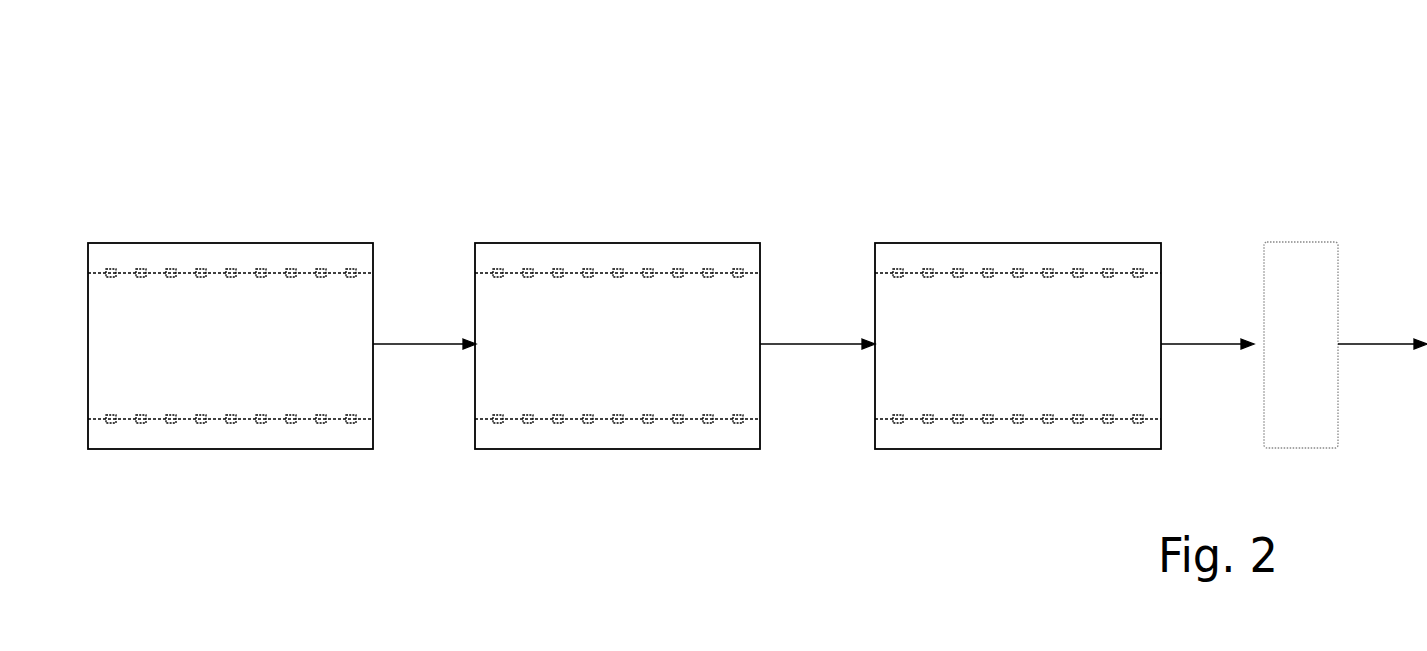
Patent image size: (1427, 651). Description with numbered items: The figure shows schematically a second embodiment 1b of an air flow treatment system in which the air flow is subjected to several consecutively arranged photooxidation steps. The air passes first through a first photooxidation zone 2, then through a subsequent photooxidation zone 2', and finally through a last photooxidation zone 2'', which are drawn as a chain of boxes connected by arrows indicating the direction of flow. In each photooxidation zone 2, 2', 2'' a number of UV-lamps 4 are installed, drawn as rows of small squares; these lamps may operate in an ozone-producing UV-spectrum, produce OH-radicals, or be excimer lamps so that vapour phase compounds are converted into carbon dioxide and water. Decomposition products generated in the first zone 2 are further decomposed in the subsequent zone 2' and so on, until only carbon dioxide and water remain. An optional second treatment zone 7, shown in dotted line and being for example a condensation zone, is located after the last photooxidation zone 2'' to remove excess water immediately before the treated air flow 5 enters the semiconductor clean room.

The second embodiment of air flow treatment system 1b is at (731, 116).
The first photooxidation zone 2 is at (230, 299).
The subsequent photooxidation zone 2' is at (617, 298).
The last photooxidation zone 2'' is at (1018, 298).
The UV-lamps 4 is at (320, 270).
The treated air flow 5 is at (1373, 340).
The second treatment zone 7 is at (1297, 253).